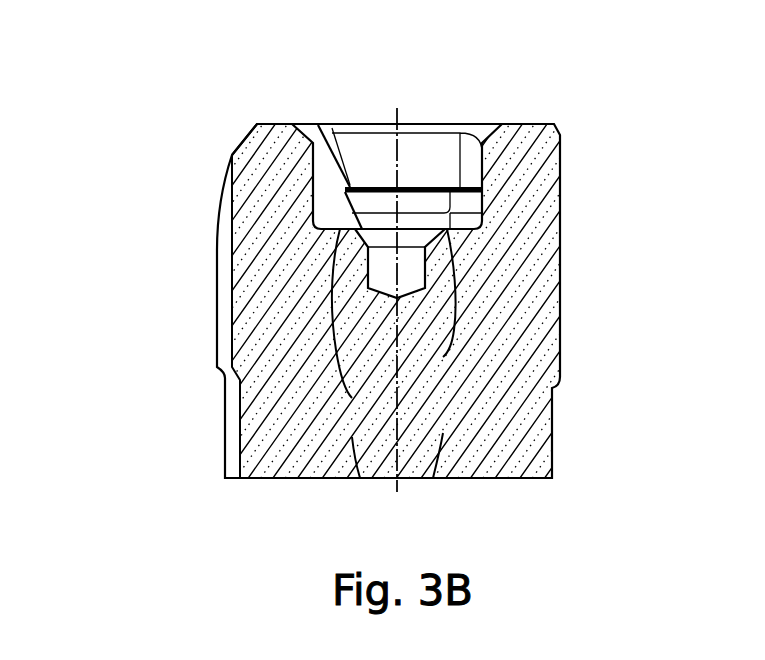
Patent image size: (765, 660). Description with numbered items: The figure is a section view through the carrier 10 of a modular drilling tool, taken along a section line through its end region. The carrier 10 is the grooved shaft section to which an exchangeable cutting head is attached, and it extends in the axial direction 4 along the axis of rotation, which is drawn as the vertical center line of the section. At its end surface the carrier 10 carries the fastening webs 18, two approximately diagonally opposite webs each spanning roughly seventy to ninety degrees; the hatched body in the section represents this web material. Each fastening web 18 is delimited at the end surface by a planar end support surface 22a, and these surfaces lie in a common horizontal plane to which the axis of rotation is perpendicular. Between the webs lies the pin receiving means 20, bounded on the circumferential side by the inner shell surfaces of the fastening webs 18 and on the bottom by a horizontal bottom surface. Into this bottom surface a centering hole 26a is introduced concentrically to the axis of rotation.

The carrier 10 is at (382, 295).
The fastening web 18 is at (522, 215).
The pin receiving means 20 is at (412, 152).
The end support surface 22a is at (272, 123).
The centering hole 26a is at (417, 262).
The axial direction 4 is at (398, 480).